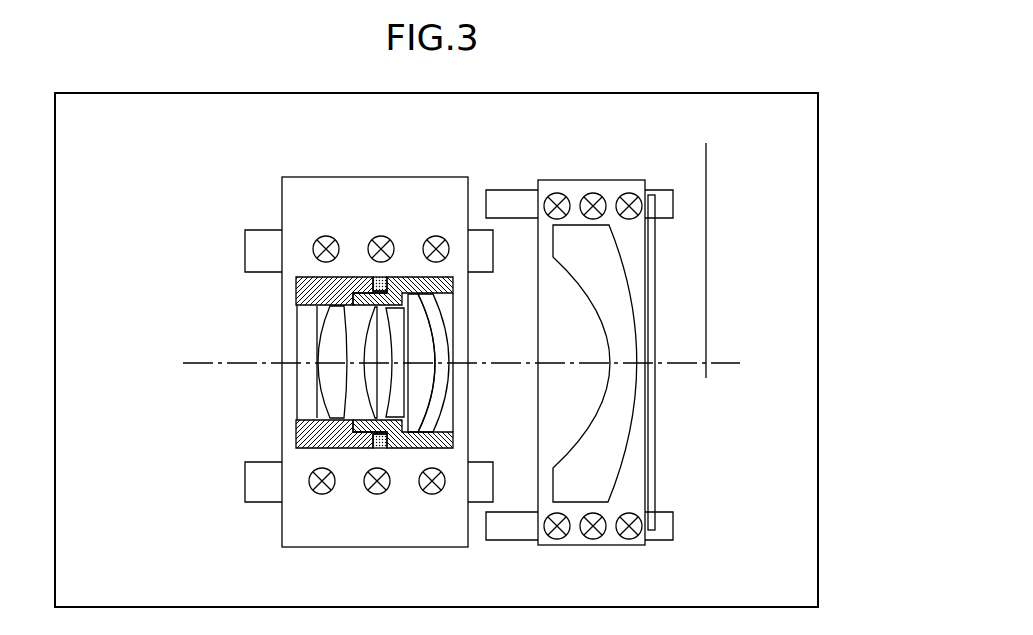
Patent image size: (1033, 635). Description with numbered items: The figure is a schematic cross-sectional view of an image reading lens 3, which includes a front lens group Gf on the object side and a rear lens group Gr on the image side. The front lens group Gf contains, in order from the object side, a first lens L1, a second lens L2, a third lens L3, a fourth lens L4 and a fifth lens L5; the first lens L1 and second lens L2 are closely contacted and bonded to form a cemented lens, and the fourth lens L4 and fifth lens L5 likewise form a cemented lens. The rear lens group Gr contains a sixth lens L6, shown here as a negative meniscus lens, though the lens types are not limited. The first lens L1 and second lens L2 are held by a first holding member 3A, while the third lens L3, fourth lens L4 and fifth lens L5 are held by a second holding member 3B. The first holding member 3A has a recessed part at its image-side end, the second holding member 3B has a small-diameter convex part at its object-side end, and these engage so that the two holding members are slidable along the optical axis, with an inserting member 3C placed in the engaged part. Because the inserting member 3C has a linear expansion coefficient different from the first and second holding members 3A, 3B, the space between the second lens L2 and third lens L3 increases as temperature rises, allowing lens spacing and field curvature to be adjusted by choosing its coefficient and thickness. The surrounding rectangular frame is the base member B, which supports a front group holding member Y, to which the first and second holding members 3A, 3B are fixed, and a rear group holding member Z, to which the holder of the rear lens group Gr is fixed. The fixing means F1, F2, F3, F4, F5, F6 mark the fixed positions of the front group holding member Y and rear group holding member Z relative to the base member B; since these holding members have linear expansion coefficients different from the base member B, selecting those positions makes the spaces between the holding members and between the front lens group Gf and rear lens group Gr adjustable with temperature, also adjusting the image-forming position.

The image reading lens 3 is at (243, 187).
The first holding member 3A is at (299, 277).
The second holding member 3B is at (418, 277).
The inserting member 3C is at (378, 278).
The base member B is at (732, 93).
The front group holding member Y is at (292, 511).
The rear group holding member Z is at (628, 488).
The front lens group Gf is at (270, 139).
The rear lens group Gr is at (633, 139).
The first lens L1 is at (327, 381).
The second lens L2 is at (348, 410).
The third lens L3 is at (393, 402).
The fourth lens L4 is at (423, 350).
The fifth lens L5 is at (433, 317).
The sixth lens L6 is at (578, 233).
The fixing means F1 is at (326, 236).
The fixing means F2 is at (381, 236).
The fixing means F3 is at (436, 236).
The fixing means F4 is at (557, 193).
The fixing means F5 is at (593, 193).
The fixing means F6 is at (629, 193).